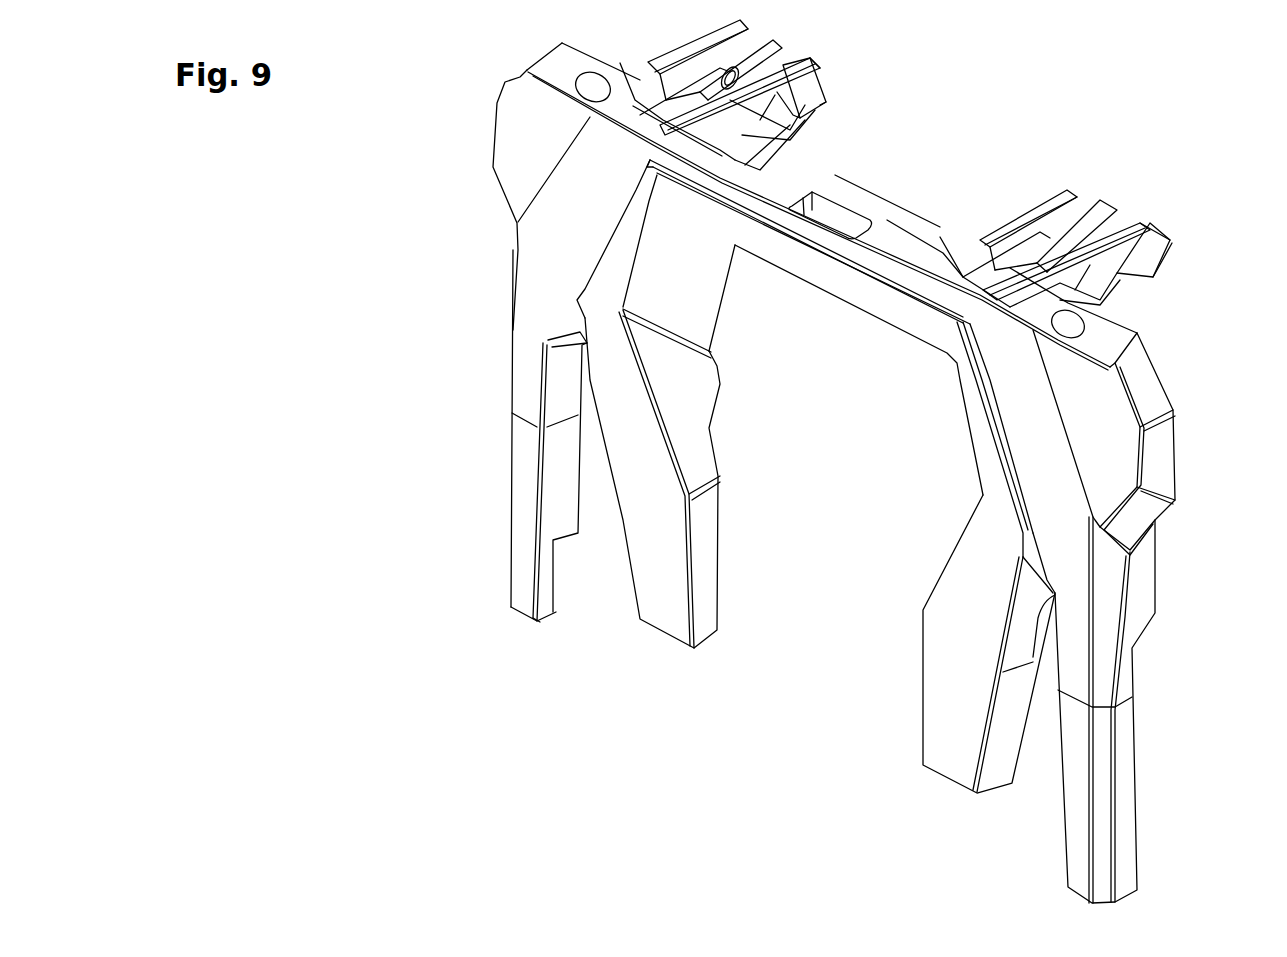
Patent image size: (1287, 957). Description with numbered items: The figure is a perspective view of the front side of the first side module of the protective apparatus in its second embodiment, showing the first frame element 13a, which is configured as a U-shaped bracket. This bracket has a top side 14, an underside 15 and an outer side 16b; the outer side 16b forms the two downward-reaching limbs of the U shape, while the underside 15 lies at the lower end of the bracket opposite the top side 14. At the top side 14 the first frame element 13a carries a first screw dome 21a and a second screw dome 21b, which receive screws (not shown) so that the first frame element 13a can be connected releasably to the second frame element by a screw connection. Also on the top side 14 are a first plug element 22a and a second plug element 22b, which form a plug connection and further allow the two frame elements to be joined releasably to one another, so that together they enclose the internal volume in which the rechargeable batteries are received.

The top side 14 is at (903, 215).
The first screw dome 21a is at (790, 52).
The first plug element 22a is at (805, 103).
The second screw dome 21b is at (1140, 215).
The second plug element 22b is at (1178, 266).
The first frame element 13a is at (535, 373).
The underside 15 is at (527, 598).
The outer side 16b is at (662, 520).